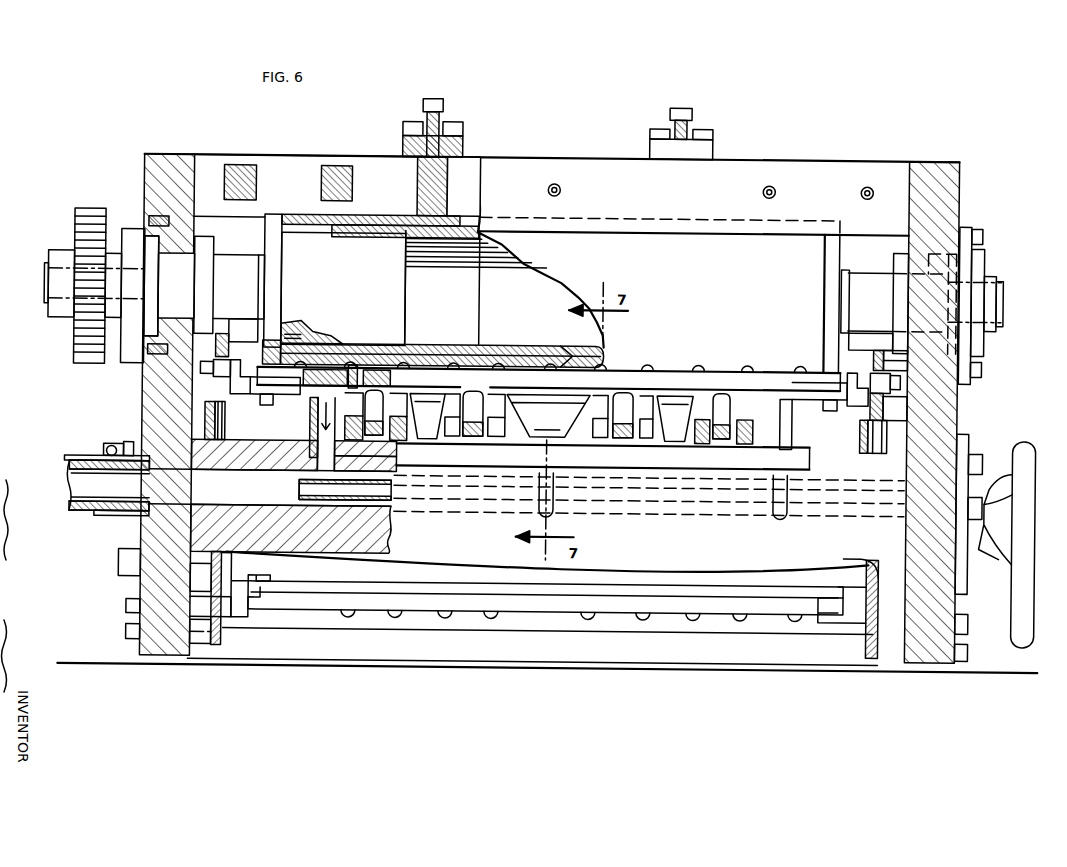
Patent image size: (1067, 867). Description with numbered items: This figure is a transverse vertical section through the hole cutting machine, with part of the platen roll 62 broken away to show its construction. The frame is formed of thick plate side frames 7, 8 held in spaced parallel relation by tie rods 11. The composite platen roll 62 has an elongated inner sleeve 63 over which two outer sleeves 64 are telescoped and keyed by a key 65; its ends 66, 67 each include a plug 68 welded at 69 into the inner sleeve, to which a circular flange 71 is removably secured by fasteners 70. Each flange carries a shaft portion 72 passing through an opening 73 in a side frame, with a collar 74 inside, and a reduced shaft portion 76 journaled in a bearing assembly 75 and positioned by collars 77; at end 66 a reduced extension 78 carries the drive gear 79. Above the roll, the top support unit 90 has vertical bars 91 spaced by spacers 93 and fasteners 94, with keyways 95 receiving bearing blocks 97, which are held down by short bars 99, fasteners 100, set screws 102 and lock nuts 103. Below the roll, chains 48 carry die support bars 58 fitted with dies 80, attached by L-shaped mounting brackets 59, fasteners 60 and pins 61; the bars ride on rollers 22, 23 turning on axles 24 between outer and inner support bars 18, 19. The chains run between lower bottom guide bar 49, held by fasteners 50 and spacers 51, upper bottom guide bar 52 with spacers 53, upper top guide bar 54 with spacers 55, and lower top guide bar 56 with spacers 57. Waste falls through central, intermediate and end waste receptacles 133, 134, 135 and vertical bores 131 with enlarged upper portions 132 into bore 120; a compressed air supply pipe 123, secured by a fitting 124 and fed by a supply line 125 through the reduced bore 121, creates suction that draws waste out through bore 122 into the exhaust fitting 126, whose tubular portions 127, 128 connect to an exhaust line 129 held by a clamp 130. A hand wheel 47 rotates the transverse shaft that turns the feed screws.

The side frame 7 is at (957, 189).
The side frame 8 is at (142, 184).
The tie rods 11 is at (549, 634).
The outer support bars 18 is at (352, 442).
The inner support bars 19 is at (452, 440).
The rollers 22 is at (377, 440).
The rollers 23 is at (473, 440).
The axle 24 is at (328, 434).
The hand wheel 47 is at (1022, 643).
The chains 48 is at (230, 426).
The lower bottom chain guide bar 49 is at (223, 637).
The fasteners 50 is at (128, 640).
The spacers 51 is at (205, 657).
The upper bottom chain guide bar 52 is at (240, 582).
The spacers 53 is at (192, 582).
The upper top chain guide bar 54 is at (222, 337).
The spacers 55 is at (906, 355).
The lower top chain guide bar 56 is at (208, 410).
The spacers 57 is at (906, 405).
The die support bars 58 is at (782, 370).
The mounting brackets 59 is at (241, 388).
The fasteners 60 is at (262, 408).
The pins 61 is at (212, 371).
The platen roll 62 is at (697, 250).
The inner sleeve 63 is at (518, 347).
The outer sleeves 64 is at (548, 376).
The key 65 is at (568, 348).
The platen roll end 66 is at (246, 262).
The platen roll end 67 is at (849, 266).
The plug 68 is at (404, 294).
The welding 69 is at (262, 350).
The fasteners 70 is at (300, 326).
The circular flange 71 is at (280, 250).
The shaft portion 72 is at (248, 318).
The opening 73 is at (176, 262).
The collar 74 is at (210, 262).
The bearing assembly 75 is at (124, 355).
The reduced shaft portion 76 is at (180, 288).
The collars 77 is at (118, 318).
The reduced extension 78 is at (46, 284).
The drive gear 79 is at (72, 345).
The dies 80 is at (354, 368).
The top support unit 90 is at (546, 157).
The bars 91 is at (350, 158).
The spacers 93 is at (254, 186).
The fasteners 94 is at (559, 190).
The keyways 95 is at (445, 195).
The bearing blocks 97 is at (415, 192).
The short bars 99 is at (460, 148).
The fasteners 100 is at (410, 123).
The set screw 102 is at (437, 100).
The lock nut 103 is at (440, 116).
The bore 120 is at (252, 508).
The reduced cross-sectional bore 121 is at (944, 498).
The second bore 122 is at (200, 448).
The compressed air supply pipe 123 is at (364, 503).
The fitting 124 is at (966, 487).
The compressed air supply line 125 is at (1013, 445).
The exhaust fitting 126 is at (126, 516).
The tubular portion 127 is at (270, 488).
The second tubular portion 128 is at (72, 483).
The exhaust line 129 is at (80, 462).
The clamp 130 is at (110, 448).
The vertical bores 131 is at (335, 465).
The enlarged upper portion 132 is at (335, 452).
The central waste receptacle 133 is at (566, 420).
The intermediate waste receptacles 134 is at (432, 390).
The end waste receptacles 135 is at (310, 422).